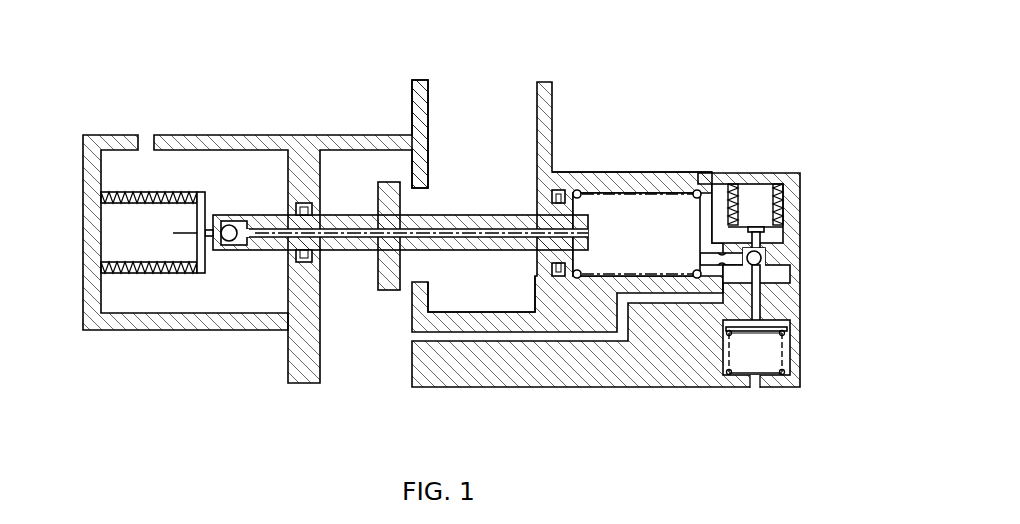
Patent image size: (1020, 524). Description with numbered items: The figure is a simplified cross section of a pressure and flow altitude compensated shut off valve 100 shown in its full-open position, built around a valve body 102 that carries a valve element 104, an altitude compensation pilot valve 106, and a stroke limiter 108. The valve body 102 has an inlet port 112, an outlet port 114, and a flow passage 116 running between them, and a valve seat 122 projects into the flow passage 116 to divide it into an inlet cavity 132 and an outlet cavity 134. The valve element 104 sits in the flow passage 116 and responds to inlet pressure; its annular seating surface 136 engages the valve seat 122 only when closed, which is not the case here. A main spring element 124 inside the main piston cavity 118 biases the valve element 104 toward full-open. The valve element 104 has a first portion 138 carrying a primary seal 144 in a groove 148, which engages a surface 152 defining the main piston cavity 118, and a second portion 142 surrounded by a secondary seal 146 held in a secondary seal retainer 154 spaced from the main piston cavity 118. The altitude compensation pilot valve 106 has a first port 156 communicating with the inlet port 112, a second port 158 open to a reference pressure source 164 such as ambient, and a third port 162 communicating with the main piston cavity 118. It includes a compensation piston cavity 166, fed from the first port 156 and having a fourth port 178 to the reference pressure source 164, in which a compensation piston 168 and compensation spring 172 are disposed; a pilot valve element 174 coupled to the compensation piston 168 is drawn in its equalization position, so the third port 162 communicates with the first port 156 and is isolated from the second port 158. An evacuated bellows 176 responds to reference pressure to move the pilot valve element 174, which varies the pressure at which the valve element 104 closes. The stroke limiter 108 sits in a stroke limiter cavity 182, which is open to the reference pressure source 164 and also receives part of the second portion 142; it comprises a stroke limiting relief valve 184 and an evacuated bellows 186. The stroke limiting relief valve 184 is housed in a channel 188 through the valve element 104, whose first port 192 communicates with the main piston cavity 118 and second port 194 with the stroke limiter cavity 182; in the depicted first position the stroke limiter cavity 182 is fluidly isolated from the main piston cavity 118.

The pressure and flow altitude compensated shut off valve 100 is at (745, 43).
The valve body 102 is at (438, 211).
The valve element 104 is at (484, 158).
The altitude compensation pilot valve 106 is at (842, 250).
The stroke limiter 108 is at (163, 174).
The inlet port 112 is at (357, 378).
The outlet port 114 is at (452, 97).
The flow passage 116 is at (481, 294).
The main piston cavity 118 is at (638, 234).
The valve seat 122 is at (411, 187).
The main spring element 124 is at (622, 186).
The inlet cavity 132 is at (347, 309).
The outlet cavity 134 is at (512, 199).
The annular seating surface 136 is at (395, 192).
The first portion 138 is at (582, 216).
The second portion 142 is at (262, 147).
The primary seal 144 is at (560, 189).
The secondary seal 146 is at (300, 262).
The groove 148 is at (552, 270).
The surface 152 is at (697, 190).
The secondary seal retainer 154 is at (306, 200).
The first port 156 is at (762, 290).
The second port 158 is at (762, 236).
The third port 162 is at (738, 266).
The reference pressure source 164 is at (499, 239).
The compensation piston cavity 166 is at (790, 320).
The compensation piston 168 is at (728, 333).
The compensation spring 172 is at (785, 368).
The pilot valve element 174 is at (762, 258).
The evacuated bellows 176 is at (783, 195).
The fourth port 178 is at (755, 388).
The stroke limiter cavity 182 is at (167, 160).
The stroke limiting relief valve 184 is at (229, 225).
The evacuated bellows 186 is at (135, 273).
The channel 188 is at (333, 250).
The first port 192 is at (580, 237).
The second port 194 is at (212, 241).